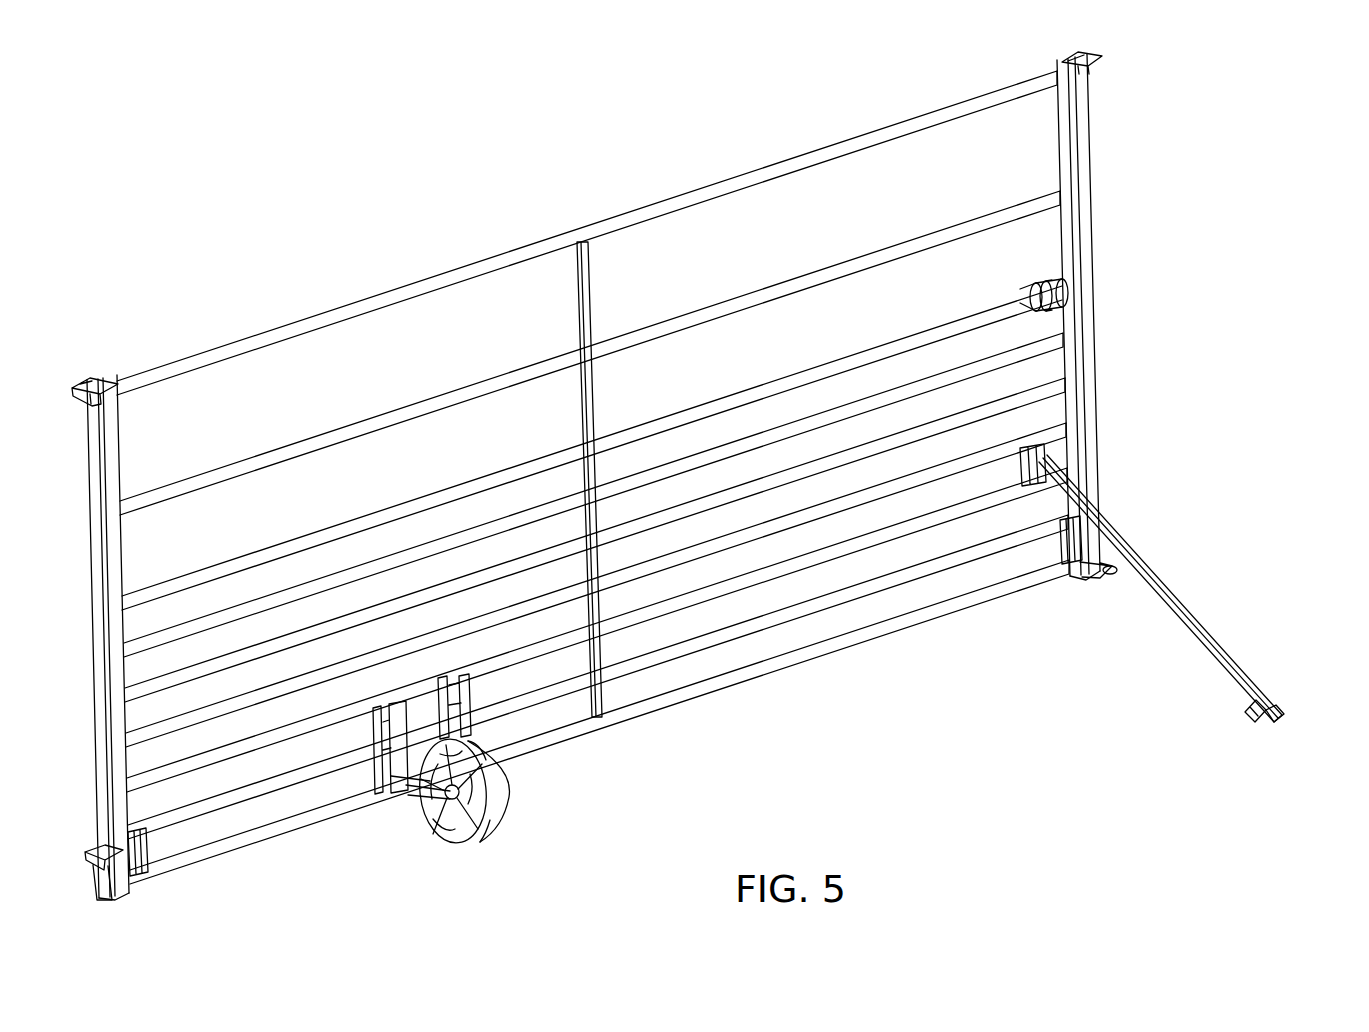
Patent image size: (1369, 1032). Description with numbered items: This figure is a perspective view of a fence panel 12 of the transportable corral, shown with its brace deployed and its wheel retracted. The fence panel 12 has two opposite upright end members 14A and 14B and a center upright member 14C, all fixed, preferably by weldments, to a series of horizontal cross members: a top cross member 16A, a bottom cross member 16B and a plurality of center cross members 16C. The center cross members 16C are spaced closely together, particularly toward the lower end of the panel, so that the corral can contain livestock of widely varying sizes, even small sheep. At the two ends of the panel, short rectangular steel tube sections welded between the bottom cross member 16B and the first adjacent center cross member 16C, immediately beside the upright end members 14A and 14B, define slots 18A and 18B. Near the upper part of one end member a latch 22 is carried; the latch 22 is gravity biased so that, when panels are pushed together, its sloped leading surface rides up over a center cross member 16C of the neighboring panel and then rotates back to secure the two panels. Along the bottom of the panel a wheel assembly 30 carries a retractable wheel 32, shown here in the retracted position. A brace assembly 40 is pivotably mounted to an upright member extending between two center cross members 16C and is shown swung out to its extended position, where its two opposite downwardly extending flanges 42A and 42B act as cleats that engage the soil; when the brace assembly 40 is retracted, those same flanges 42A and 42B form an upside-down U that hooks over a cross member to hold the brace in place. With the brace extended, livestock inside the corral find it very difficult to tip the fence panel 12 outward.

The fence panel 12 is at (703, 477).
The upright end member 14A is at (110, 452).
The upright end member 14B is at (1078, 135).
The center upright member 14C is at (590, 300).
The top cross member 16A is at (206, 350).
The bottom cross member 16B is at (300, 830).
The center cross member 16C is at (304, 440).
The slot 18A is at (145, 850).
The slot 18B is at (1064, 548).
The latch 22 is at (1056, 286).
The wheel assembly 30 is at (505, 771).
The wheel 32 is at (530, 786).
The brace assembly 40 is at (1177, 603).
The downwardly extending flange 42A is at (1240, 716).
The downwardly extending flange 42B is at (1260, 730).